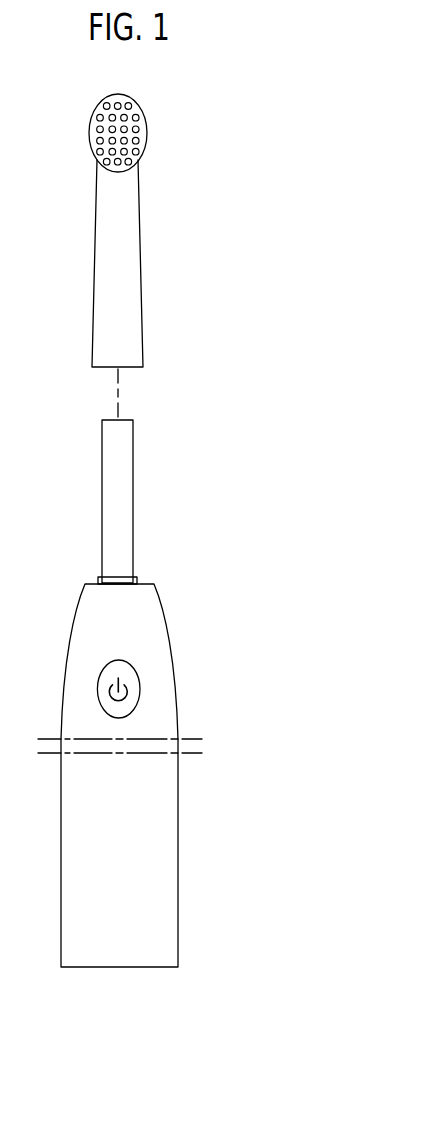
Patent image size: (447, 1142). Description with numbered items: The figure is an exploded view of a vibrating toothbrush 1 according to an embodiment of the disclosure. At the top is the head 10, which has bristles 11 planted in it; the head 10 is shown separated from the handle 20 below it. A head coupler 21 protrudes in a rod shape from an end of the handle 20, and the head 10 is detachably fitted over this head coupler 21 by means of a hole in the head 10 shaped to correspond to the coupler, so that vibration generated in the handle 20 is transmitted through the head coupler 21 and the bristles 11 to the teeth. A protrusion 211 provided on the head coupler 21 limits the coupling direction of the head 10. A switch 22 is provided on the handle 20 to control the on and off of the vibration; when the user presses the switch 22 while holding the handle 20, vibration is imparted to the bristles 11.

The vibrating toothbrush 1 is at (272, 118).
The head 10 is at (139, 188).
The bristles 11 is at (141, 103).
The handle 20 is at (168, 624).
The head coupler 21 is at (134, 500).
The protrusion 211 is at (138, 578).
The switch 22 is at (140, 688).